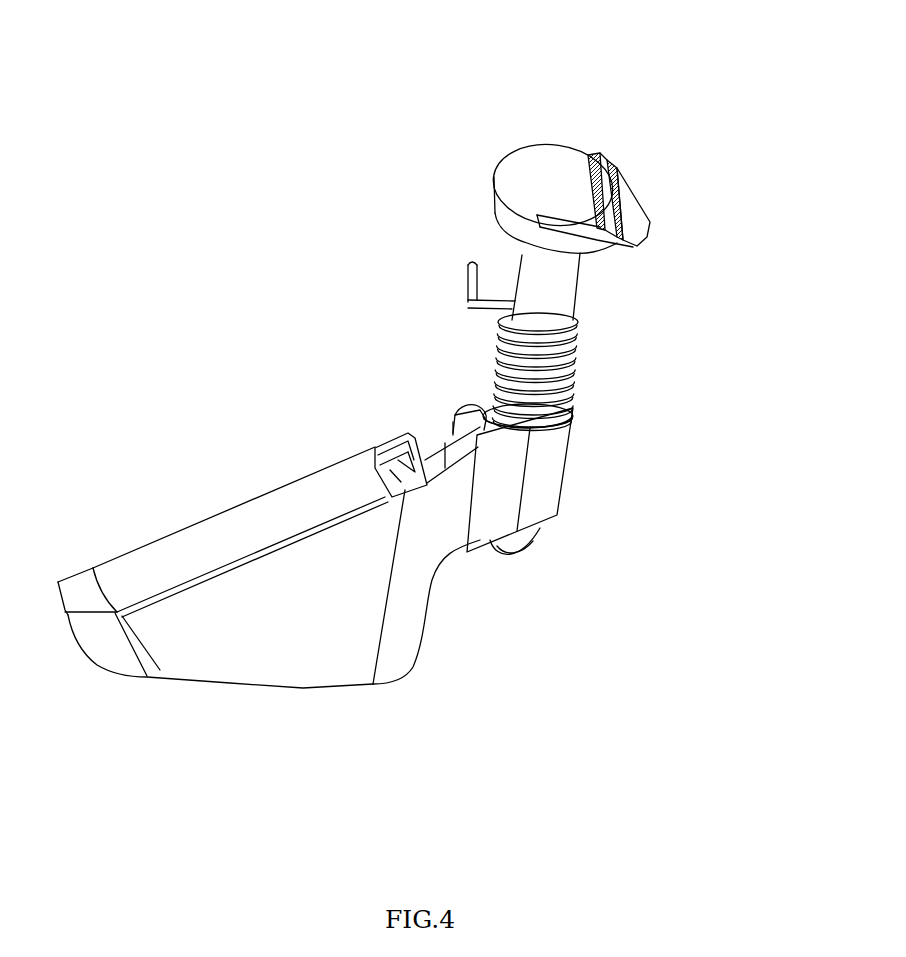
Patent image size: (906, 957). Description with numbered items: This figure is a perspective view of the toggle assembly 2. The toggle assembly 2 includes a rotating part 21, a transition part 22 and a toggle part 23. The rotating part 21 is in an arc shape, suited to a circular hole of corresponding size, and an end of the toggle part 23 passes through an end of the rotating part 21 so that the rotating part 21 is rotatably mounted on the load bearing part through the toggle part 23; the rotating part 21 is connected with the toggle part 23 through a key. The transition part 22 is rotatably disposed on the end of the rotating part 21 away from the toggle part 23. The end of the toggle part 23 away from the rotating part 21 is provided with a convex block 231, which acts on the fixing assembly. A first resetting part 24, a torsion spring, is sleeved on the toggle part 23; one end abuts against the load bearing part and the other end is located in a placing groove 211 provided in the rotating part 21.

The toggle assembly 2 is at (684, 157).
The rotating part 21 is at (298, 690).
The placing groove 211 is at (475, 413).
The transition part 22 is at (208, 518).
The toggle part 23 is at (577, 298).
The convex block 231 is at (648, 247).
The first resetting part 24 is at (573, 372).